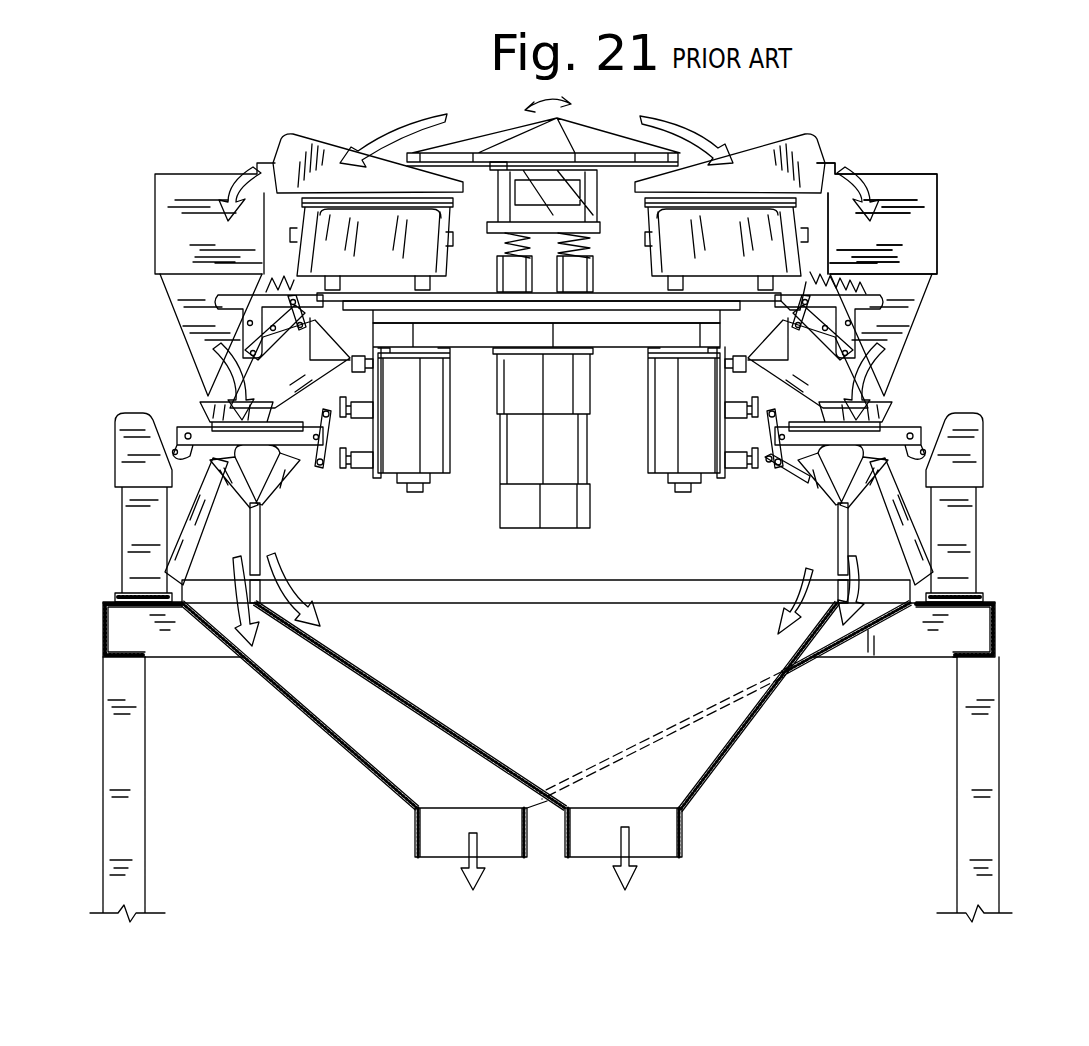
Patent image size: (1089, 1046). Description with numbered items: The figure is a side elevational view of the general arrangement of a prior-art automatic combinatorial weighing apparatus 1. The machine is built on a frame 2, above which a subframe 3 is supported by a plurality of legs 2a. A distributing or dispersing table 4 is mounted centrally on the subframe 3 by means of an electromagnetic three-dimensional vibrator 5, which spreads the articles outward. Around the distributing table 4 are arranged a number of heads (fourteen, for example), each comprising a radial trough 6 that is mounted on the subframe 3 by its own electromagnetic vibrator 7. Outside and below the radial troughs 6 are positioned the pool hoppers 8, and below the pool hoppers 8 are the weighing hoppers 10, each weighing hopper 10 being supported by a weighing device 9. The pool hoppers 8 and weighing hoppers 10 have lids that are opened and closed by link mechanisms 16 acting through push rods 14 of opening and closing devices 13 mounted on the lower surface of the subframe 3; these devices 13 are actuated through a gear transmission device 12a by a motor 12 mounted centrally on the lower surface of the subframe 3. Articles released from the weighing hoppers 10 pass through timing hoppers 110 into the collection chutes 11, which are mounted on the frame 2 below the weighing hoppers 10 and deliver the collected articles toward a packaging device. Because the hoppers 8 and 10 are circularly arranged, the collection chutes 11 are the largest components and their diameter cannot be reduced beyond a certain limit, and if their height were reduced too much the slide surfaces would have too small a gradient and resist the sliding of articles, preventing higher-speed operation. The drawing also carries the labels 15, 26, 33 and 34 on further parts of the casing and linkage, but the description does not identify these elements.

The automatic combinatorial weighing apparatus 1 is at (950, 234).
The frame 2 is at (995, 630).
The legs 2a is at (203, 523).
The subframe 3 is at (473, 291).
The distributing table 4 is at (583, 138).
The electromagnetic three-dimensional vibrator 5 is at (560, 190).
The radial troughs 6 is at (750, 150).
The electromagnetic vibrators 7 is at (672, 248).
The pool hoppers 8 is at (942, 285).
The weighing devices 9 is at (958, 500).
The weighing hoppers 10 is at (838, 482).
The collection chutes 11 is at (780, 686).
The motor 12 is at (568, 490).
The gear transmission device 12a is at (473, 345).
The opening and closing devices 13 is at (392, 463).
The push rods 14 is at (705, 478).
The lever 15 is at (915, 322).
The link mechanisms 16 is at (812, 481).
The lever 26 is at (240, 322).
The outer casing 33 is at (882, 173).
The funnel wall 34 is at (212, 372).
The timing hoppers 110 is at (683, 832).